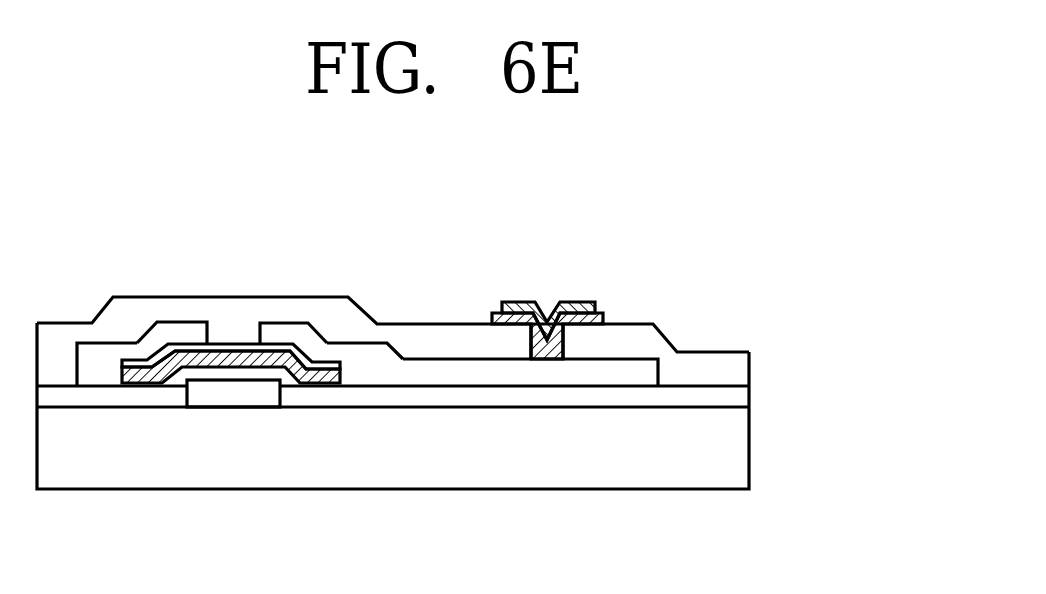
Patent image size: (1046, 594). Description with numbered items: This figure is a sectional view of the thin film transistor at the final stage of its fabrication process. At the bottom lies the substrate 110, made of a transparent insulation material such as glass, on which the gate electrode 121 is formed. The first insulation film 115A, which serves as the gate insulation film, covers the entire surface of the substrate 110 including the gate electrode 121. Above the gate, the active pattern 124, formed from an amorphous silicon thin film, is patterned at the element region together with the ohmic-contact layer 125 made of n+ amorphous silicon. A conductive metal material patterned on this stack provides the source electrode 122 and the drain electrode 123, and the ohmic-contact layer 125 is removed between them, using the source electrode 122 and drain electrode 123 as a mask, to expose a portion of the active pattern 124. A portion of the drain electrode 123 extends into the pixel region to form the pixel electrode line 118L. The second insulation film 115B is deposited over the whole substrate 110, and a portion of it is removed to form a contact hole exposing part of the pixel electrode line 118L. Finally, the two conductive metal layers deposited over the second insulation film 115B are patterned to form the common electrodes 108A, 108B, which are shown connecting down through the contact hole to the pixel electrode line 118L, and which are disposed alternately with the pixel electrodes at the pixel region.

The substrate 110 is at (737, 457).
The first insulation film 115A is at (737, 397).
The second insulation film 115B is at (737, 364).
The pixel electrode line 118L is at (585, 373).
The gate electrode 121 is at (233, 397).
The source electrode 122 is at (188, 332).
The drain electrode 123 is at (277, 335).
The active pattern 124 is at (338, 356).
The ohmic-contact layer 125 is at (302, 348).
The common electrode 108A is at (593, 298).
The common electrode 108B is at (518, 293).